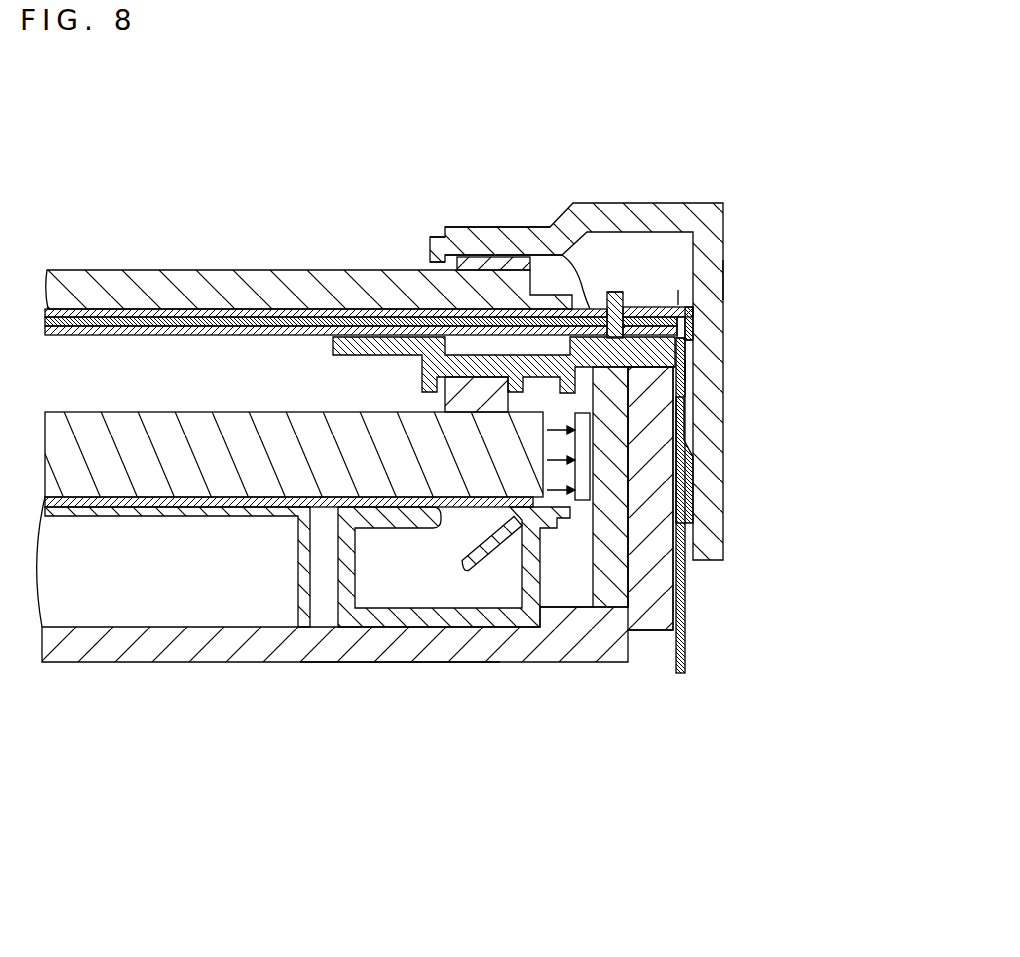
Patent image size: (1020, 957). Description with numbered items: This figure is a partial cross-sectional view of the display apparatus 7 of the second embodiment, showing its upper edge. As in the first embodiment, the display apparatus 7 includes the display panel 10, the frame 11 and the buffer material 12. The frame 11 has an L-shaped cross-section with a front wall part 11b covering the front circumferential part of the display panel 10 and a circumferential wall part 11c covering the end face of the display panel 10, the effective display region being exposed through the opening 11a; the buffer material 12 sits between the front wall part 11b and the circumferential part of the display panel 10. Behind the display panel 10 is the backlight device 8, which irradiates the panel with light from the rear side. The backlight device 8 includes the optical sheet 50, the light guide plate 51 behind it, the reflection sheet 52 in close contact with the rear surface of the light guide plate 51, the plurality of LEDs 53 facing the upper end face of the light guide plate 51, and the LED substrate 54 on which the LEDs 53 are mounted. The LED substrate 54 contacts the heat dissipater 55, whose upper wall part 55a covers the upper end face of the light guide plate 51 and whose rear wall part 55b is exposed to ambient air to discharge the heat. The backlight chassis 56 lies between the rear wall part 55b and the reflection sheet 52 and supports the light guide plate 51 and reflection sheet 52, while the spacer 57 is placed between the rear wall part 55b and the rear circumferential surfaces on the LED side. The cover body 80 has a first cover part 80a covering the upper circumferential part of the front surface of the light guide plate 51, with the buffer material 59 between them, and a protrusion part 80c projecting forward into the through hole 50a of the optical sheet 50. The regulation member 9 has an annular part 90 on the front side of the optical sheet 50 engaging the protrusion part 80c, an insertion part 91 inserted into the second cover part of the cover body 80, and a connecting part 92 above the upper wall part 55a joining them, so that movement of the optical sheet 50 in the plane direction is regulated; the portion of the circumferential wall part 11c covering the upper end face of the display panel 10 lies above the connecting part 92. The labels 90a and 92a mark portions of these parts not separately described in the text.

The display apparatus 7 is at (756, 112).
The backlight device 8 is at (697, 763).
The regulation member 9 is at (678, 304).
The display panel 10 is at (265, 285).
The frame 11 is at (728, 220).
The opening 11a is at (433, 240).
The front wall part 11b is at (521, 228).
The circumferential wall part 11c is at (712, 278).
The buffer material 12 is at (477, 258).
The optical sheet 50 is at (202, 320).
The through hole 50a is at (615, 292).
The light guide plate 51 is at (147, 420).
The reflection sheet 52 is at (110, 410).
The LEDs 53 is at (568, 545).
The LED substrate 54 is at (608, 600).
The heat dissipater 55 is at (485, 664).
The upper wall part 55a is at (652, 614).
The rear wall part 55b is at (408, 668).
The backlight chassis 56 is at (298, 605).
The spacer 57 is at (352, 625).
The buffer material 59 is at (445, 407).
The cover body 80 is at (693, 668).
The first cover part 80a is at (345, 337).
The protrusion part 80c is at (625, 305).
The annular part 90 is at (550, 228).
The end portion of sealing member 90a is at (605, 293).
The insertion part 91 is at (690, 420).
The connecting part 92 is at (693, 342).
The adhesive portion 92a is at (693, 365).